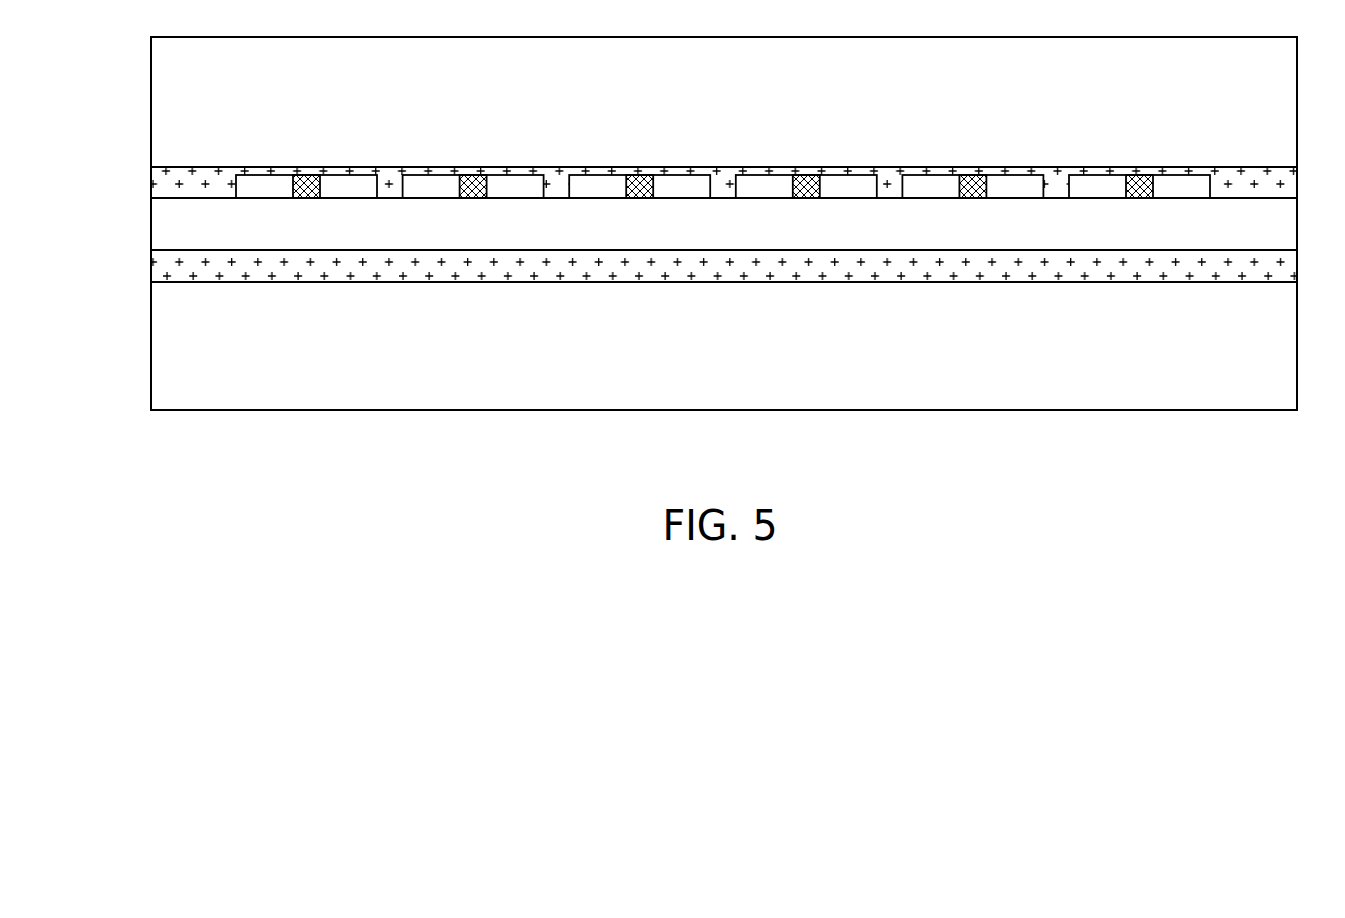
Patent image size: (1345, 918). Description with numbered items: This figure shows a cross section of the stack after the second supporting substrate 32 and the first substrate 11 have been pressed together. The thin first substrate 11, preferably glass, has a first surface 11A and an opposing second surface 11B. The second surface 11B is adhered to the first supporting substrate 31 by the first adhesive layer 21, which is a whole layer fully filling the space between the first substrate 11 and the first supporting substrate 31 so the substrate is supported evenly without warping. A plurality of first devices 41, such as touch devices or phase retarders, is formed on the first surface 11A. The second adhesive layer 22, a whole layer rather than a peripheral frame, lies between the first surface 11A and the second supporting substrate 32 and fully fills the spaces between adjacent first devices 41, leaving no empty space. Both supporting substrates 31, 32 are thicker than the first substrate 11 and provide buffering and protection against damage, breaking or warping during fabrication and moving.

The first substrate 11 is at (730, 240).
The first surface 11A is at (1262, 197).
The second surface 11B is at (1260, 252).
The first adhesive layer 21 is at (168, 269).
The second adhesive layer 22 is at (170, 187).
The first supporting substrate 31 is at (731, 364).
The second supporting substrate 32 is at (731, 122).
The first devices 41 is at (272, 182).